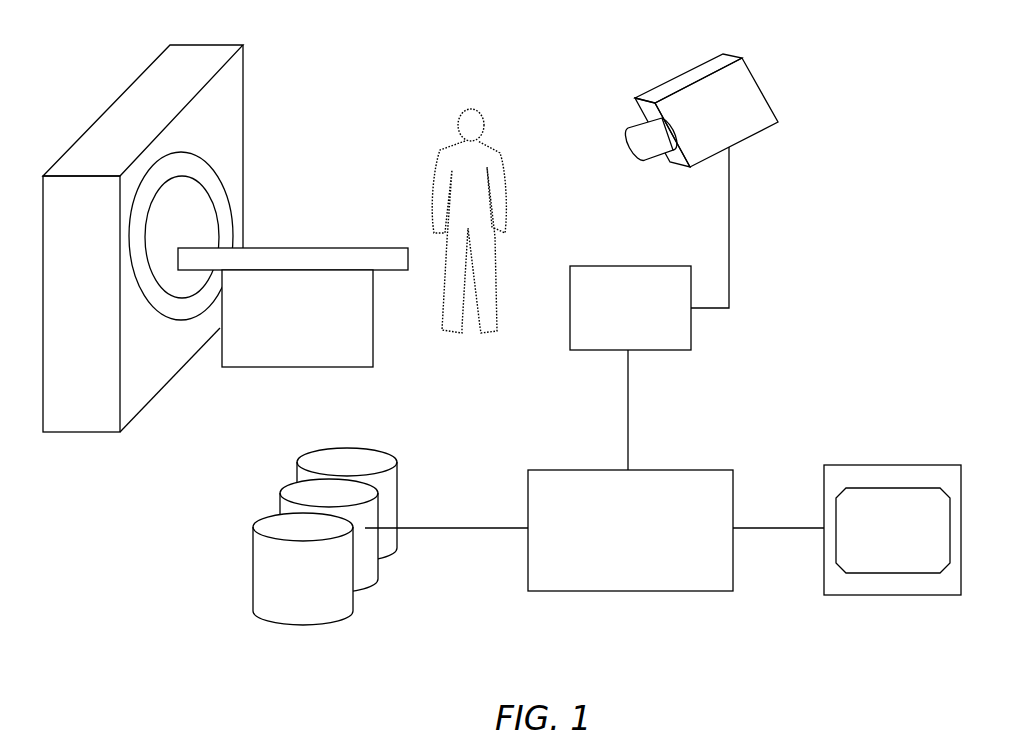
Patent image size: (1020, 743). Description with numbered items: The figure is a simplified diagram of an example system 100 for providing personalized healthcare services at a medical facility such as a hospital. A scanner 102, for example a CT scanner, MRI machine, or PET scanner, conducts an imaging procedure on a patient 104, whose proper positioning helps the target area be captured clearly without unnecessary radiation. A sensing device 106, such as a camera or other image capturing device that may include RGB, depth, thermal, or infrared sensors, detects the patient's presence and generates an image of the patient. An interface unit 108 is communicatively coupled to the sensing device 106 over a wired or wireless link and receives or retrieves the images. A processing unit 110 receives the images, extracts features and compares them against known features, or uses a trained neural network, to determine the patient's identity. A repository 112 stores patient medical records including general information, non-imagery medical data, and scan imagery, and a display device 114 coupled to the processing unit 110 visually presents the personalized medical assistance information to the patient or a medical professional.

The system 100 is at (514, 84).
The scanner 102 is at (235, 118).
The patient 104 is at (492, 162).
The sensing device 106 is at (767, 113).
The interface unit 108 is at (675, 340).
The processing unit 110 is at (583, 578).
The repository 112 is at (262, 577).
The display device 114 is at (880, 472).